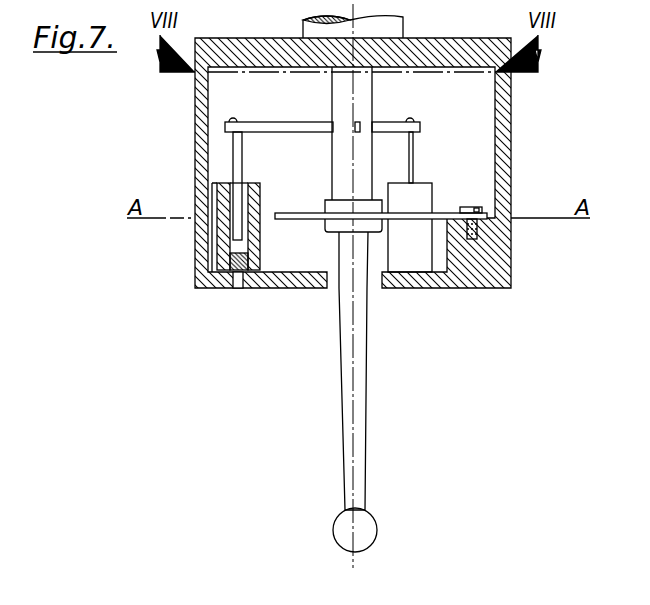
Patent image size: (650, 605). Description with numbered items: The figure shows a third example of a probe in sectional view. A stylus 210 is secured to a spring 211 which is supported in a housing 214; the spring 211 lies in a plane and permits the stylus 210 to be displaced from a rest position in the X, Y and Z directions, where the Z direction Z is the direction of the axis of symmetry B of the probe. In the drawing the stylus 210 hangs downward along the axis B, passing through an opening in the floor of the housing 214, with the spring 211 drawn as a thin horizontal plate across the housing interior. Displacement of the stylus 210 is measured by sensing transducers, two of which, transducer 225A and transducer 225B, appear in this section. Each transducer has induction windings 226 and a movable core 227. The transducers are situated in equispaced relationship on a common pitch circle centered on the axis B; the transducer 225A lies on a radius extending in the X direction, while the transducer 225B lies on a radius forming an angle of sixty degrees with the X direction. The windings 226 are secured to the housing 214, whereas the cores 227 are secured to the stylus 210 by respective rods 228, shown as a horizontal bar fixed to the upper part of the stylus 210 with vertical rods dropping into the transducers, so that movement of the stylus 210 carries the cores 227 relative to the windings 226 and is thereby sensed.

The housing 214 is at (505, 160).
The rod 228 is at (283, 127).
The movable core 227 is at (238, 197).
The sensing transducer 225A is at (218, 190).
The induction windings 226 is at (220, 237).
The sensing transducer 225B is at (422, 188).
The spring 211 is at (305, 219).
The stylus 210 is at (365, 455).
The axis of symmetry B is at (353, 343).
The Z direction Z is at (355, 415).